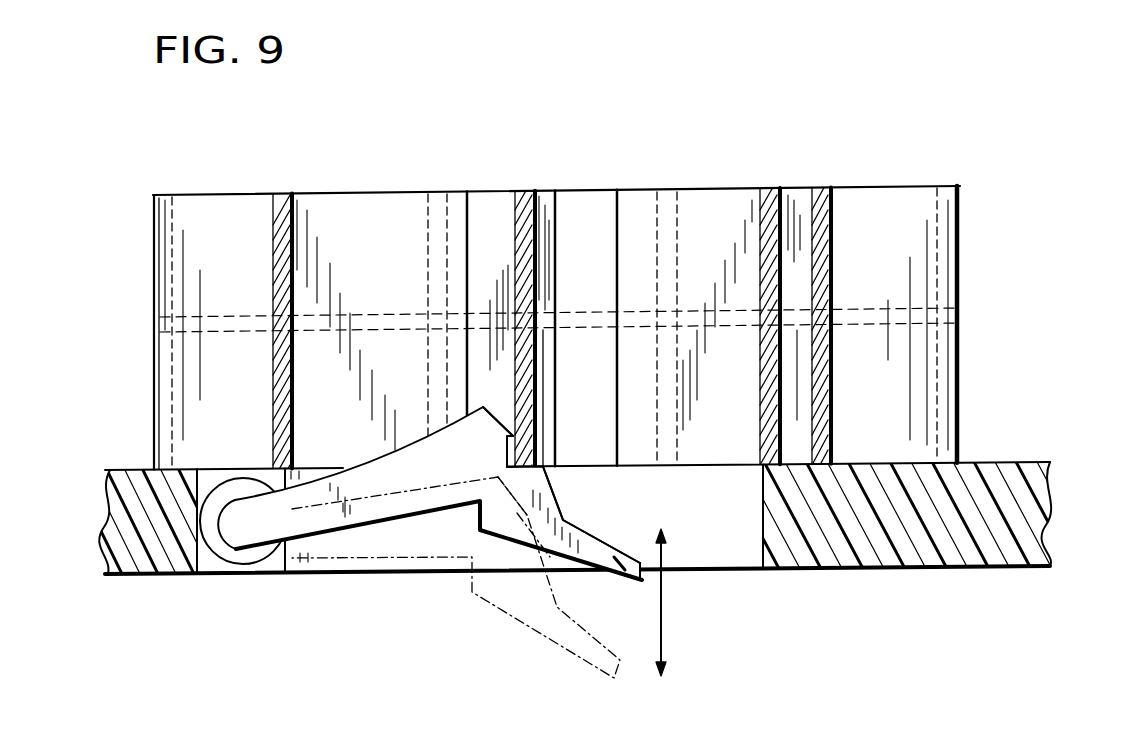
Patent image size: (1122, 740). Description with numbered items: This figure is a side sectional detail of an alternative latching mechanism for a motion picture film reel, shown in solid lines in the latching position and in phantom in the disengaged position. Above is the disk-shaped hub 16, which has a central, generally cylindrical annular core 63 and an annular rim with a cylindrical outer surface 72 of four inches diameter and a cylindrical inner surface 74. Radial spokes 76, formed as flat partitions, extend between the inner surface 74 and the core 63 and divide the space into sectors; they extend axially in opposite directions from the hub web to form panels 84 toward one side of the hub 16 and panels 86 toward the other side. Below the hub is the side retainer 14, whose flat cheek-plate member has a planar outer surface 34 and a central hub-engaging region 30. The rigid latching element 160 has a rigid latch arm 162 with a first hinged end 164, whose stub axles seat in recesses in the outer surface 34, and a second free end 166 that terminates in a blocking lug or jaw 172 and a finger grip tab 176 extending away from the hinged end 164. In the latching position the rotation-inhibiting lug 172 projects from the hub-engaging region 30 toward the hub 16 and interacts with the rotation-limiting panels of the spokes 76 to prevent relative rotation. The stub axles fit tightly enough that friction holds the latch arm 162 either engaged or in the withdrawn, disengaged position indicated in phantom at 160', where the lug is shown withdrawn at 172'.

The side retainer 14 is at (963, 577).
The hub 16 is at (980, 214).
The hub-engaging region 30 is at (827, 568).
The outer surface 34 is at (153, 575).
The annular core 63 is at (579, 212).
The cylindrical outer surface 72 is at (960, 275).
The cylindrical inner surface 74 is at (888, 205).
The radial spokes 76 is at (515, 247).
The panels 84 is at (541, 203).
The panels 86 is at (547, 403).
The latching element 160 is at (429, 522).
The latching element in disengaged position 160' is at (456, 597).
The latch arm 162 is at (310, 521).
The first hinged end 164 is at (207, 573).
The second free end 166 is at (564, 512).
The rotation-inhibiting lug 172 is at (438, 361).
The rotation-inhibiting lug in disengaged position 172' is at (580, 493).
The finger grip tab 176 is at (621, 570).